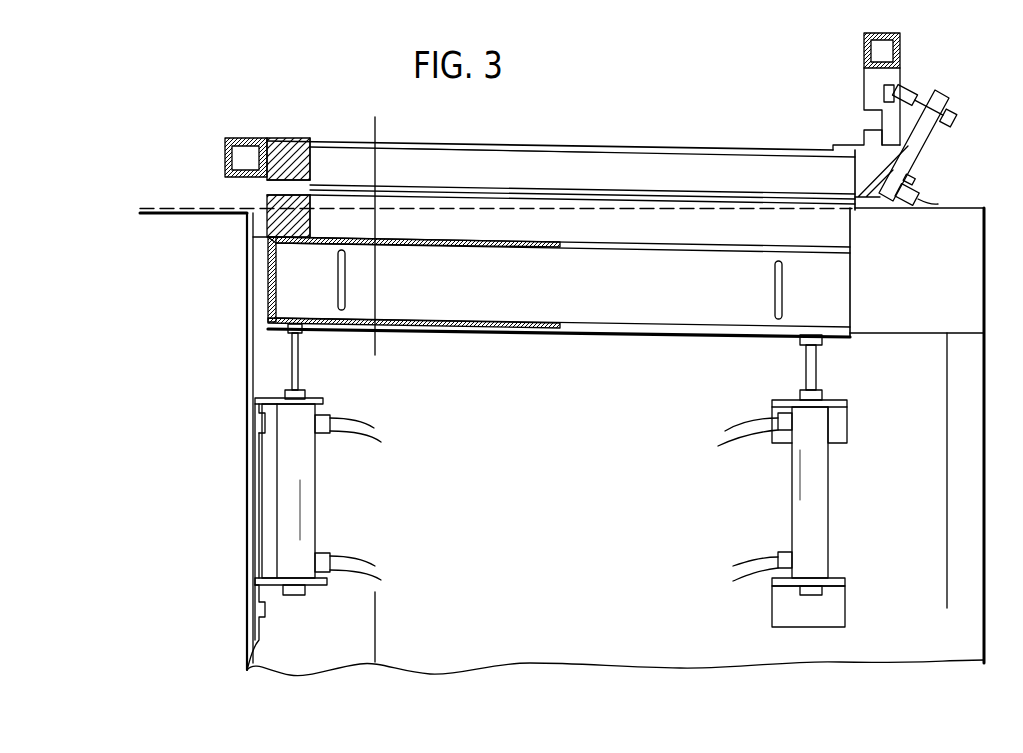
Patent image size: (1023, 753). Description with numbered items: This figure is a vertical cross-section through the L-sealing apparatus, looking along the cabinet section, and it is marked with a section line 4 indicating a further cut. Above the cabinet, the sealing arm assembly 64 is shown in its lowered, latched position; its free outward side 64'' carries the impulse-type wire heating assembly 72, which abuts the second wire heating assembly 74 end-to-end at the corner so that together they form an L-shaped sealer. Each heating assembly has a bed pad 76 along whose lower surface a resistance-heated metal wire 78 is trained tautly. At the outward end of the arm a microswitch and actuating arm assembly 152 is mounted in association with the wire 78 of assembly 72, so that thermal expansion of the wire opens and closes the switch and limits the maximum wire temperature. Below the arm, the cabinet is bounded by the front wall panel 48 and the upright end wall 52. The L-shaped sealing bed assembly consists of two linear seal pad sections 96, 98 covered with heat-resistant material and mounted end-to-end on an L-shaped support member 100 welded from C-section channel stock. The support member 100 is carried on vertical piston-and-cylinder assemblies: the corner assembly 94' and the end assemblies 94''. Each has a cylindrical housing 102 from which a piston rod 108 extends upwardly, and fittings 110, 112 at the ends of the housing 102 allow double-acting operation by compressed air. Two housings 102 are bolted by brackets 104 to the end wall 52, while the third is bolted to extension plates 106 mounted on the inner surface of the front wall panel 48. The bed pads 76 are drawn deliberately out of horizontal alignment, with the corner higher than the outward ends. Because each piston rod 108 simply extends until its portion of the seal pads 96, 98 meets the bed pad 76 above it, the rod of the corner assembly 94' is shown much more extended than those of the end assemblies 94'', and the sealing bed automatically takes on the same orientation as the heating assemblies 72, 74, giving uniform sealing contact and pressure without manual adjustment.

The section line 4- 4 is at (332, 123).
The front wall panel 48 is at (562, 499).
The end wall panel 52 is at (247, 360).
The sealing arm assembly 64 is at (224, 144).
The free outward side of the sealing arm 64'' is at (504, 132).
The wire heating assembly 72 is at (742, 143).
The wire heating assembly 74 is at (297, 141).
The bed pad 76 is at (310, 155).
The resistance-heated metal wire 78 is at (268, 187).
The corner piston-and-cylinder assembly 94' is at (247, 537).
The end piston-and-cylinder assemblies 94'' is at (835, 489).
The linear seal pad section 96 is at (714, 238).
The linear seal pad section 98 is at (268, 226).
The support member 100 is at (268, 272).
The cylindrical housing 102 is at (300, 538).
The brackets 104 is at (323, 400).
The extension plates 106 is at (775, 410).
The piston rod 108 is at (298, 376).
The fitting 110 is at (330, 433).
The fitting 112 is at (330, 555).
The microswitch and actuating arm assembly 152 is at (936, 146).